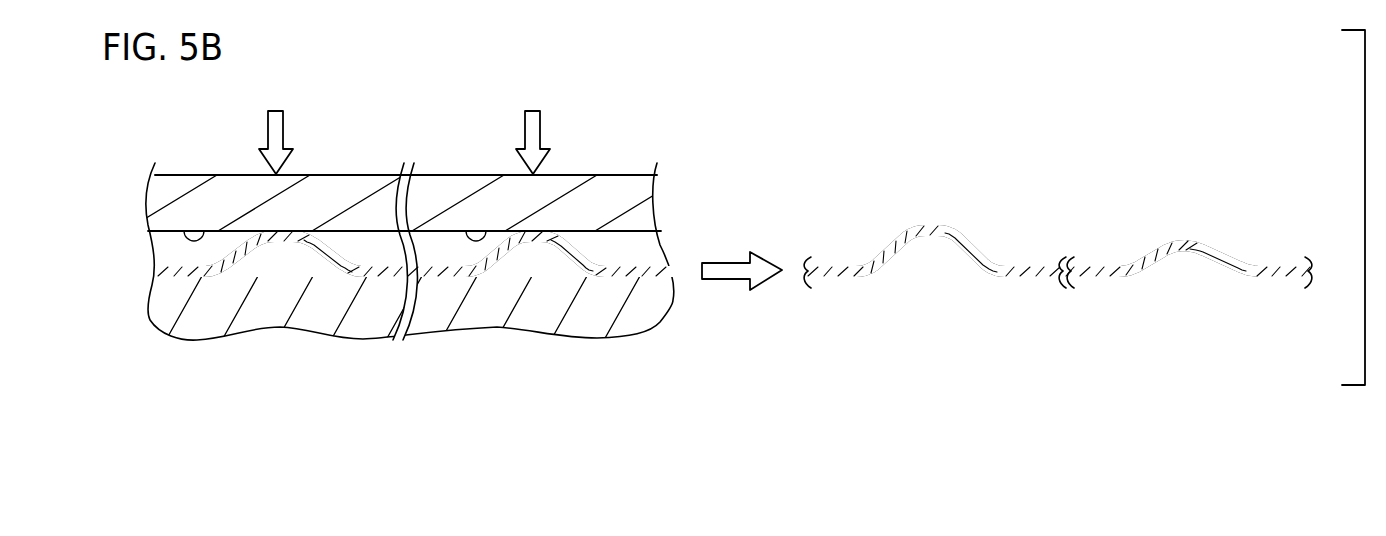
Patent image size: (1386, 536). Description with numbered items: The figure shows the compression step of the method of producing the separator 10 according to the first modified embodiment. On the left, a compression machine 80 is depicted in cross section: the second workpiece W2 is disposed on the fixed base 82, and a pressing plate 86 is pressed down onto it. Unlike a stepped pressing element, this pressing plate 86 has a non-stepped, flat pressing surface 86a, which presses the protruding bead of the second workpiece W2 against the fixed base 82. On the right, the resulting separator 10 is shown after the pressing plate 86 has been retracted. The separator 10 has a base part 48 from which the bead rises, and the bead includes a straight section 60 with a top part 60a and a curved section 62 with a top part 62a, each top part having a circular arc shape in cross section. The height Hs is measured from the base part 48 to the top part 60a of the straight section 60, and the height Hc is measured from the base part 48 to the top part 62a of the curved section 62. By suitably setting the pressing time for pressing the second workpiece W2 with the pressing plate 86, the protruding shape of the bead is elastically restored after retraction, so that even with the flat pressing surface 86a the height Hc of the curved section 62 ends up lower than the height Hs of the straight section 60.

The compression machine 80 is at (387, 108).
The pressing plate 86 is at (182, 187).
The pressing surface 86a is at (202, 231).
The fixed base 82 is at (305, 312).
The second workpiece W2 is at (163, 263).
The separator 10 is at (853, 255).
The base part 48 is at (830, 278).
The straight section 60 is at (976, 216).
The top part 60a is at (932, 225).
The curved section 62 is at (1200, 223).
The top part 62a is at (1183, 238).
The height of the straight section Hs is at (950, 226).
The height of the curved section Hc is at (1190, 240).